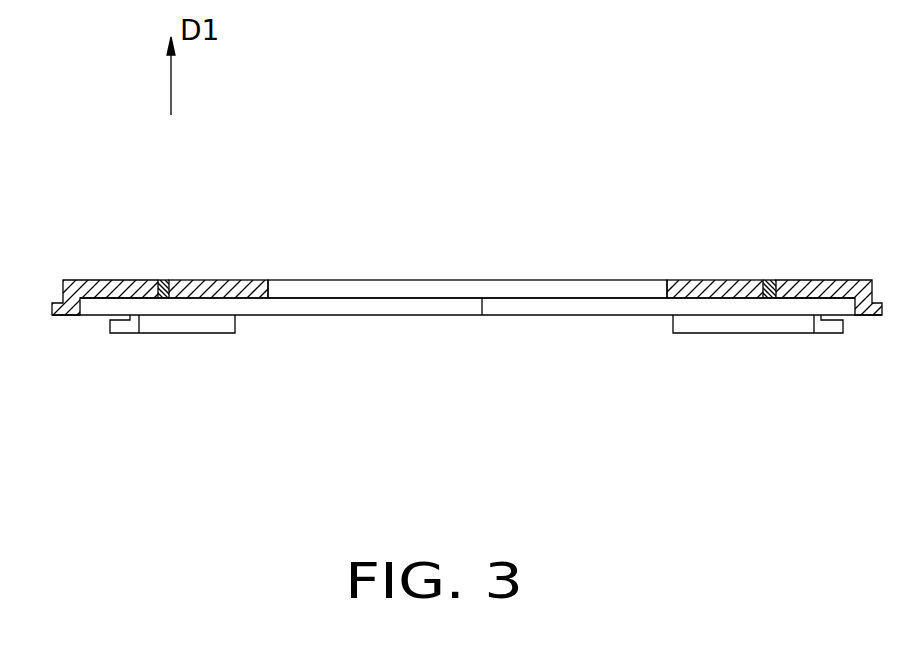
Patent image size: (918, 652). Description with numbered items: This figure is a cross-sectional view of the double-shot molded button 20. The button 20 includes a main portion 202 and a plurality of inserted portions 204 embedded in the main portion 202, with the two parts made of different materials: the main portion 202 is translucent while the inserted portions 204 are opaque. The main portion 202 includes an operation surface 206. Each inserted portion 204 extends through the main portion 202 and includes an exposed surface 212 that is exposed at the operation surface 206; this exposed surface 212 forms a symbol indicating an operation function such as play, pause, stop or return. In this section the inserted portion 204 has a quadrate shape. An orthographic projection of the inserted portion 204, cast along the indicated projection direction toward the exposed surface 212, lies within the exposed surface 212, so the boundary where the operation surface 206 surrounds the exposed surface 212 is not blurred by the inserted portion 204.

The button 20 is at (461, 82).
The main portion 202 is at (110, 285).
The inserted portion 204 is at (162, 300).
The operation surface 206 is at (236, 272).
The exposed surface 212 is at (165, 268).